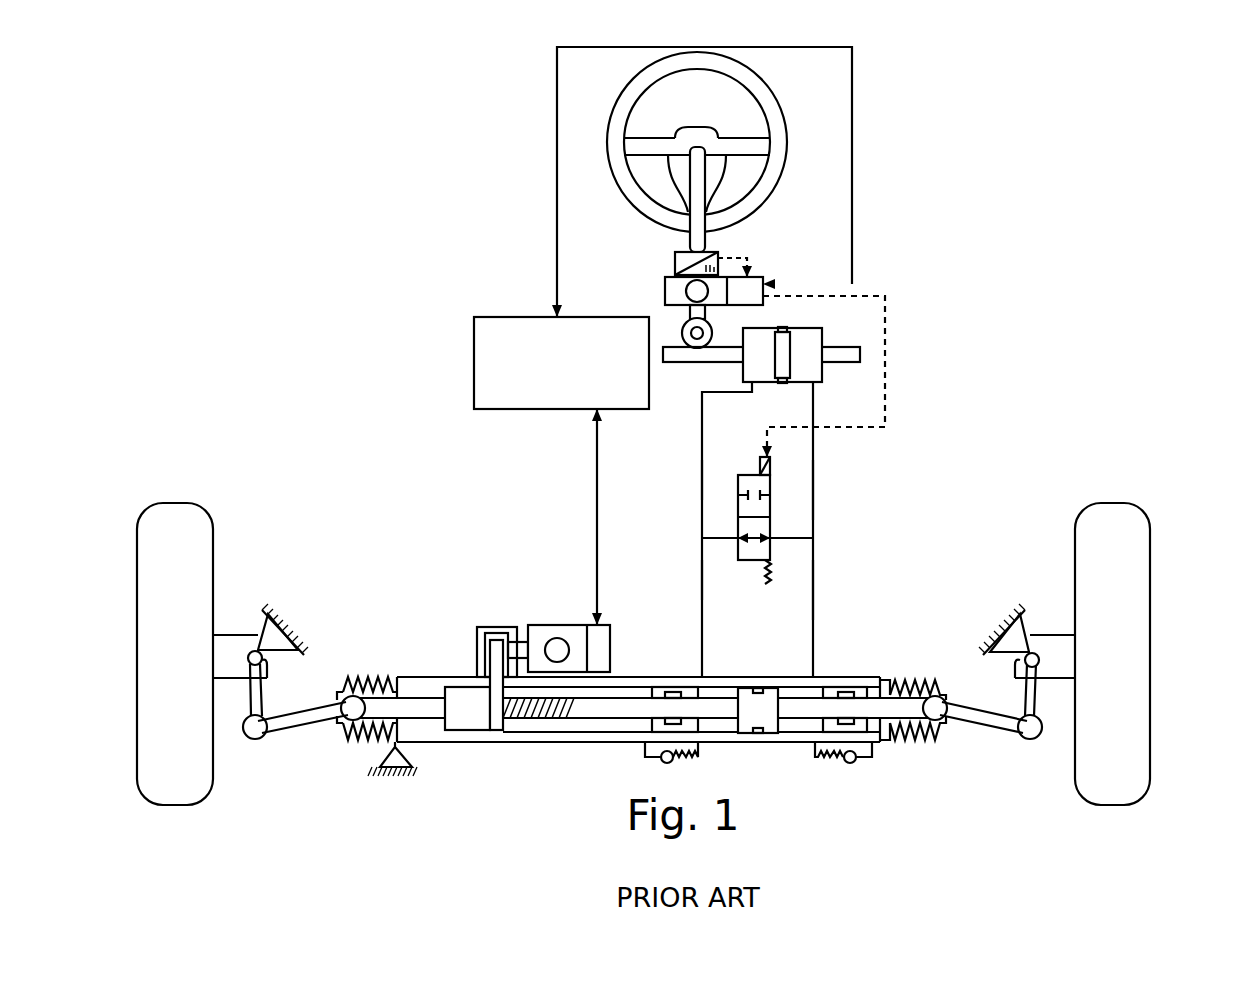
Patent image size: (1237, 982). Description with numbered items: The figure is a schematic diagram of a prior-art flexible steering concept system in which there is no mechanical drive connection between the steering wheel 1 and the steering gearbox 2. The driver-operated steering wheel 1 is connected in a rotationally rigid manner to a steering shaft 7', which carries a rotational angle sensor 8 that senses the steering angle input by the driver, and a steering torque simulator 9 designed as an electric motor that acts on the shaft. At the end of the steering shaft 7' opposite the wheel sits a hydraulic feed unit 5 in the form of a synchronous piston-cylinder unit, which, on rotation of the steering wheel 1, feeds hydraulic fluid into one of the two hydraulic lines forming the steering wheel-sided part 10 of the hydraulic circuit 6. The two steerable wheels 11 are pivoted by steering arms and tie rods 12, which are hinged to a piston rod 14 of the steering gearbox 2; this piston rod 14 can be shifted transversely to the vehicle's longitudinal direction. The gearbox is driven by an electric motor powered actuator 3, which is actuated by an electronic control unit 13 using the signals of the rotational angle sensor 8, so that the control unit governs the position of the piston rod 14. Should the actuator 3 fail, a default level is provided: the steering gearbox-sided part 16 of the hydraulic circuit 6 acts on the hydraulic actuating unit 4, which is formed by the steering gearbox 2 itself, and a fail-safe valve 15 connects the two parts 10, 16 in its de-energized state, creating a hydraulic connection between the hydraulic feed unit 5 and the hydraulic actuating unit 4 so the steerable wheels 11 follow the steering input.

The steering wheel 1 is at (770, 108).
The steering shaft 7' is at (722, 199).
The rotational angle sensor 8 is at (675, 264).
The steering torque simulator 9 is at (665, 290).
The hydraulic feed unit 5 is at (822, 340).
The electronic control unit 13 is at (474, 365).
The hydraulic circuit 6 is at (813, 465).
The steering wheel-sided part of the hydraulic circuit 10 is at (813, 500).
The steering gearbox-sided part of the hydraulic circuit 16 is at (702, 578).
The fail-safe valve 15 is at (745, 475).
The steering gearbox 2 is at (478, 628).
The actuator 3 is at (550, 625).
The piston rod 14 is at (590, 707).
The hydraulic actuating unit 4 is at (728, 730).
The steerable wheels 11 is at (205, 520).
The tie rods 12 is at (313, 715).